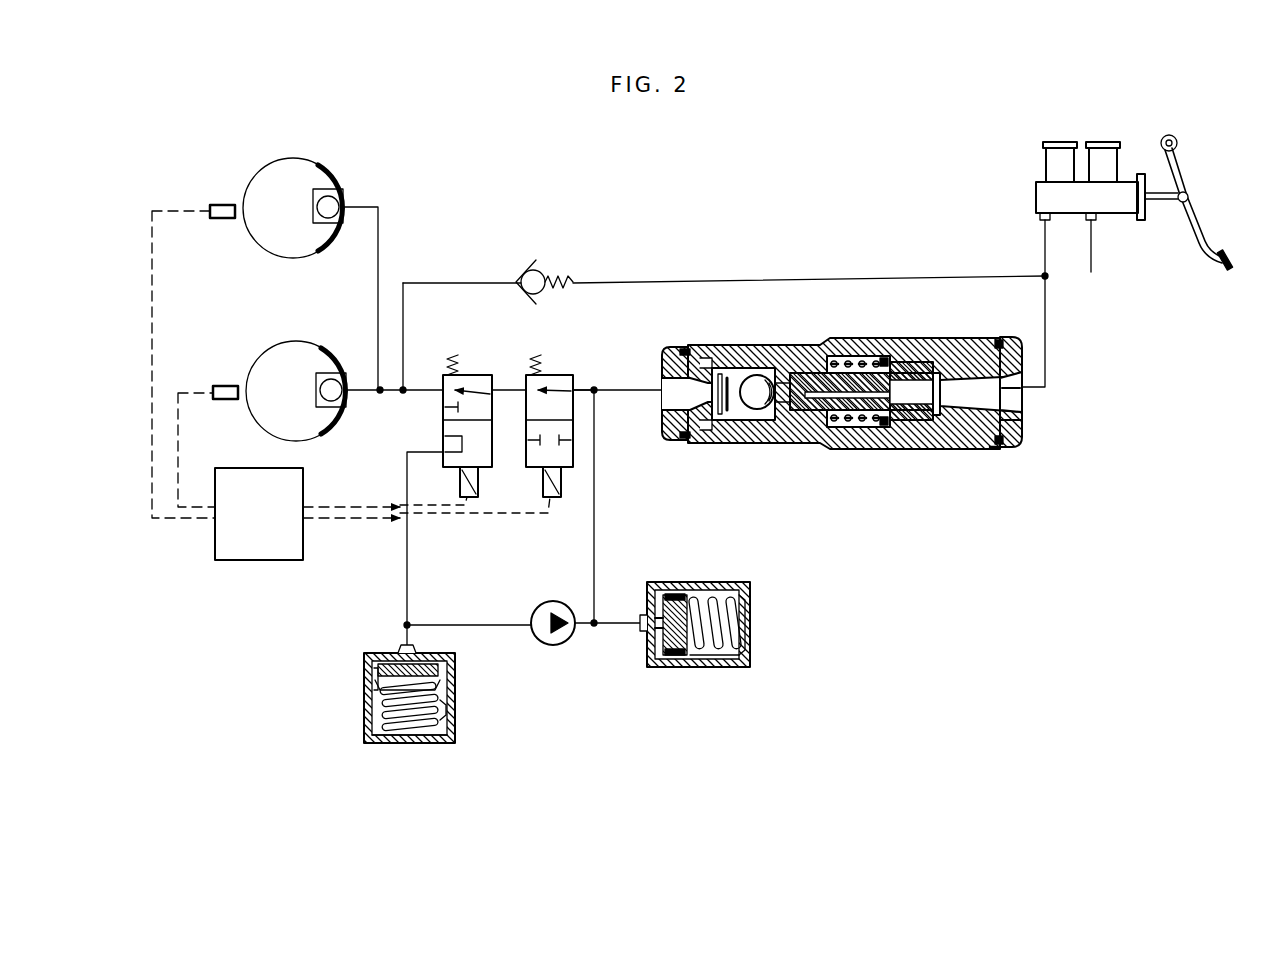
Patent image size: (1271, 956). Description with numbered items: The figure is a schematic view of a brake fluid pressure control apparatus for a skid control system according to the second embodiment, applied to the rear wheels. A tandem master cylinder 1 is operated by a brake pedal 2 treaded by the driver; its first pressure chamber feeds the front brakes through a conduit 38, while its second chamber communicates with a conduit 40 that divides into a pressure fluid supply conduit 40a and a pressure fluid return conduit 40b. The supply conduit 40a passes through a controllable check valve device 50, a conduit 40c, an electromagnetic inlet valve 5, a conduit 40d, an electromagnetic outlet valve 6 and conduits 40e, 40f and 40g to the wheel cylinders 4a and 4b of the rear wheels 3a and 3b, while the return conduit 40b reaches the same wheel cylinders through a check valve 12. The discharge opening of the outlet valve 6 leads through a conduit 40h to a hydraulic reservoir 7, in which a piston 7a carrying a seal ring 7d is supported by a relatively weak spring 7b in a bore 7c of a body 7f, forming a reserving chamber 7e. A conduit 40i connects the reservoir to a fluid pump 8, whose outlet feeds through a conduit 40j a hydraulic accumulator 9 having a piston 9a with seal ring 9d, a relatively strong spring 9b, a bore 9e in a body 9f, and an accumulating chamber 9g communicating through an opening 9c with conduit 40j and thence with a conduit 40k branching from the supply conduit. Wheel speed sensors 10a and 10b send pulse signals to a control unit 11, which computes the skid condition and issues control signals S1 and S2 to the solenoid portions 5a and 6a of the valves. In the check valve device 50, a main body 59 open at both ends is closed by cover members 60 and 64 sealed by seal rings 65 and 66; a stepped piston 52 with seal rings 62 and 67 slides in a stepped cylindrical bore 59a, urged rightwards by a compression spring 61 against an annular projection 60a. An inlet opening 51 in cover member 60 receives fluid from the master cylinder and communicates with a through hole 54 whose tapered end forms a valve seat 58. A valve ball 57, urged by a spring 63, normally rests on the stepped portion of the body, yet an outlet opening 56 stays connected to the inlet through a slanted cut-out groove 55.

The tandem master cylinder 1 is at (1073, 133).
The brake pedal 2 is at (1186, 178).
The rear wheel 3a is at (293, 163).
The rear wheel 3b is at (296, 345).
The wheel cylinder 4a is at (325, 190).
The wheel cylinder 4b is at (328, 373).
The electromagnetic inlet valve 5 is at (565, 375).
The solenoid portion 5a is at (552, 498).
The electromagnetic outlet valve 6 is at (483, 375).
The solenoid portion 6a is at (470, 498).
The hydraulic reservoir 7 is at (404, 705).
The piston 7a is at (376, 688).
The spring 7b is at (437, 695).
The bore 7c is at (440, 727).
The seal ring 7d is at (370, 672).
The reserving chamber 7e is at (396, 663).
The body 7f is at (388, 743).
The fluid pump 8 is at (557, 648).
The hydraulic accumulator 9 is at (695, 623).
The piston 9a is at (683, 660).
The spring 9b is at (737, 625).
The opening 9c is at (643, 640).
The seal ring 9d is at (672, 592).
The bore 9e is at (722, 660).
The body 9f is at (742, 597).
The accumulating chamber 9g is at (658, 620).
The wheel speed sensor 10a is at (219, 204).
The wheel speed sensor 10b is at (221, 386).
The control unit 11 is at (257, 561).
The check valve 12 is at (535, 268).
The conduit 38 is at (1093, 262).
The conduit 40 is at (849, 275).
The pressure fluid supply conduit 40a is at (627, 392).
The pressure fluid return conduit 40b is at (682, 281).
The conduit 40c is at (586, 389).
The conduit 40d is at (506, 389).
The conduit 40e is at (420, 392).
The conduit 40f is at (357, 392).
The conduit 40g is at (380, 244).
The conduit 40h is at (408, 557).
The conduit 40i is at (499, 627).
The conduit 40j is at (616, 626).
The conduit 40k is at (596, 554).
The controllable check valve device 50 is at (862, 393).
The inlet opening 51 is at (1022, 395).
The stepped piston 52 is at (860, 428).
The through hole 54 is at (893, 358).
The cut-out groove 55 is at (757, 370).
The outlet opening 56 is at (658, 392).
The valve ball 57 is at (728, 421).
The valve seat 58 is at (772, 425).
The main body 59 is at (931, 449).
The stepped cylindrical bore 59a is at (975, 450).
The cover member 60 is at (1030, 348).
The annular projection 60a is at (1023, 428).
The compression spring 61 is at (851, 355).
The seal ring 62 is at (806, 430).
The spring 63 is at (689, 441).
The cover member 64 is at (664, 430).
The seal ring 65 is at (686, 349).
The seal ring 66 is at (998, 340).
The seal ring 67 is at (916, 355).
The control signal S1 is at (359, 522).
The control signal S2 is at (359, 503).